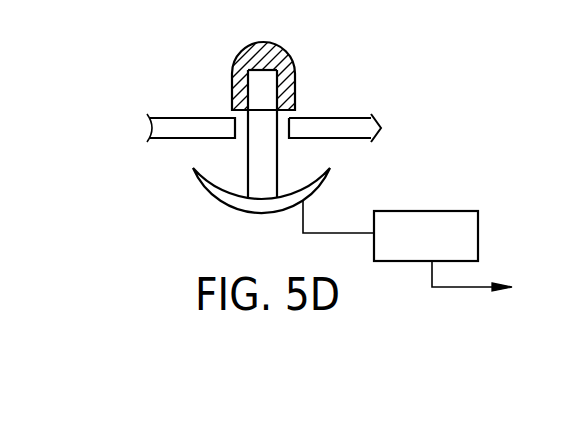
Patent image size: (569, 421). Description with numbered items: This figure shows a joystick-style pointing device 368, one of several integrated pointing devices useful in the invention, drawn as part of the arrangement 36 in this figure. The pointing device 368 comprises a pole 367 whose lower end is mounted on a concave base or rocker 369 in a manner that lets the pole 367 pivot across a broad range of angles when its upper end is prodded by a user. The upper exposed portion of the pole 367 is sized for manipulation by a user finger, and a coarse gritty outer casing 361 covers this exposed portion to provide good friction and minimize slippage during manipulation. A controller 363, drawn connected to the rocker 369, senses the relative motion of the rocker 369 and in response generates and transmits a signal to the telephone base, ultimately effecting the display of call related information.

The actuator assembly 36 is at (415, 65).
The coarse gritty outer casing 361 is at (247, 58).
The controller 363 is at (443, 211).
The pole 367 is at (277, 152).
The pointing device 368 is at (287, 38).
The concave base or rocker 369 is at (222, 203).